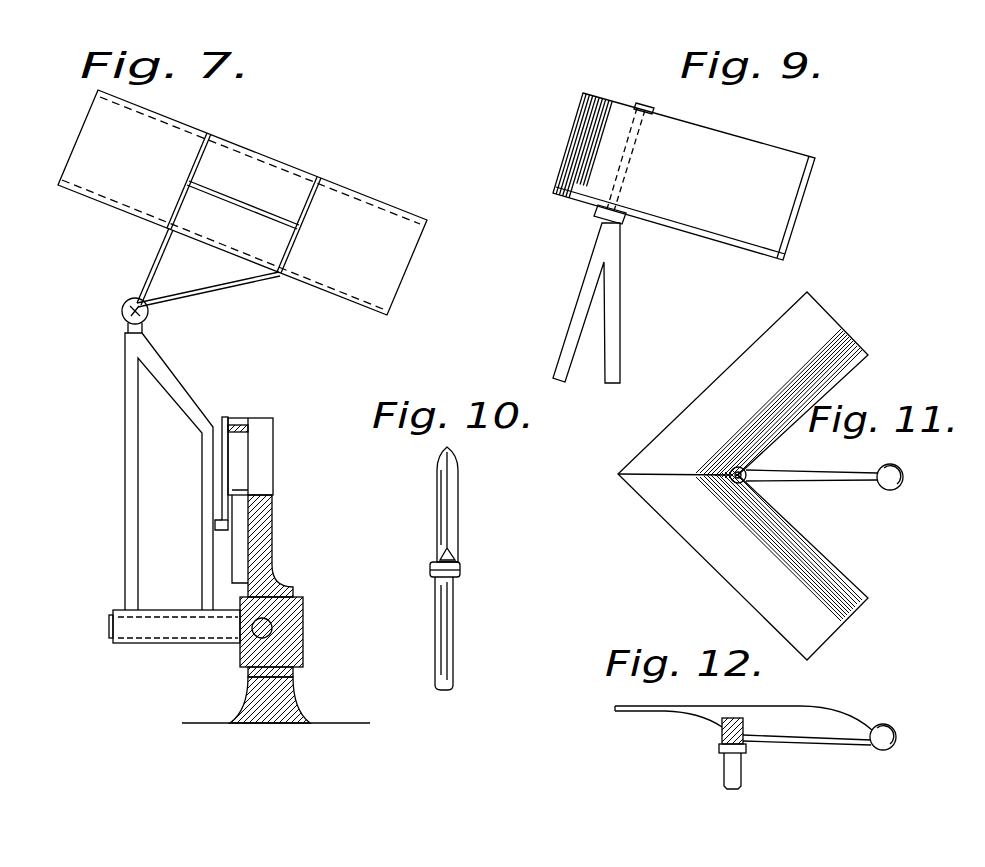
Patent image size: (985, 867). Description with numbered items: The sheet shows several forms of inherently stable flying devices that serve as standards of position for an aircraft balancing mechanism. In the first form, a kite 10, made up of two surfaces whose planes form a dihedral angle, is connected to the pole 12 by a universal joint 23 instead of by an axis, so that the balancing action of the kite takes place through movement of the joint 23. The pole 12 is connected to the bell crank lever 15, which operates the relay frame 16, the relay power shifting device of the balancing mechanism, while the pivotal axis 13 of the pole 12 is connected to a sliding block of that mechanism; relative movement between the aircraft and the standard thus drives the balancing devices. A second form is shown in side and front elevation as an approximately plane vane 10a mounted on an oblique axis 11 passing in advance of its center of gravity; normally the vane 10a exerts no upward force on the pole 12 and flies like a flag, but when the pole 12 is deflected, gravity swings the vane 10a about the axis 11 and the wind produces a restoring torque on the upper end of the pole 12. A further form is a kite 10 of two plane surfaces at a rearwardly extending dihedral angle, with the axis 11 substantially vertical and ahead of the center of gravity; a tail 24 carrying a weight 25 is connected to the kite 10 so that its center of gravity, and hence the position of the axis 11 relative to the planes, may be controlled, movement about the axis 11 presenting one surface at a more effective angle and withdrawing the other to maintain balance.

In FIG. 7, the kite 10 is at (320, 207).
In FIG. 9, the vane 10a is at (748, 152).
In FIG. 10, the vane 10a is at (458, 498).
In FIG. 9, the axis 11 is at (638, 102).
In FIG. 11, the axis 11 is at (758, 470).
In FIG. 12, the axis 11 is at (742, 738).
In FIG. 7, the pole 12 is at (177, 388).
In FIG. 9, the pole 12 is at (588, 275).
In FIG. 10, the pole 12 is at (453, 600).
In FIG. 7, the pivotal axis 13 is at (110, 640).
In FIG. 7, the bell crank lever 15 is at (228, 472).
In FIG. 7, the relay frame 16 is at (242, 538).
In FIG. 7, the universal joint 23 is at (123, 297).
In FIG. 11, the tail 24 is at (832, 478).
In FIG. 12, the tail 24 is at (800, 733).
In FIG. 11, the weight 25 is at (901, 484).
In FIG. 12, the weight 25 is at (888, 735).